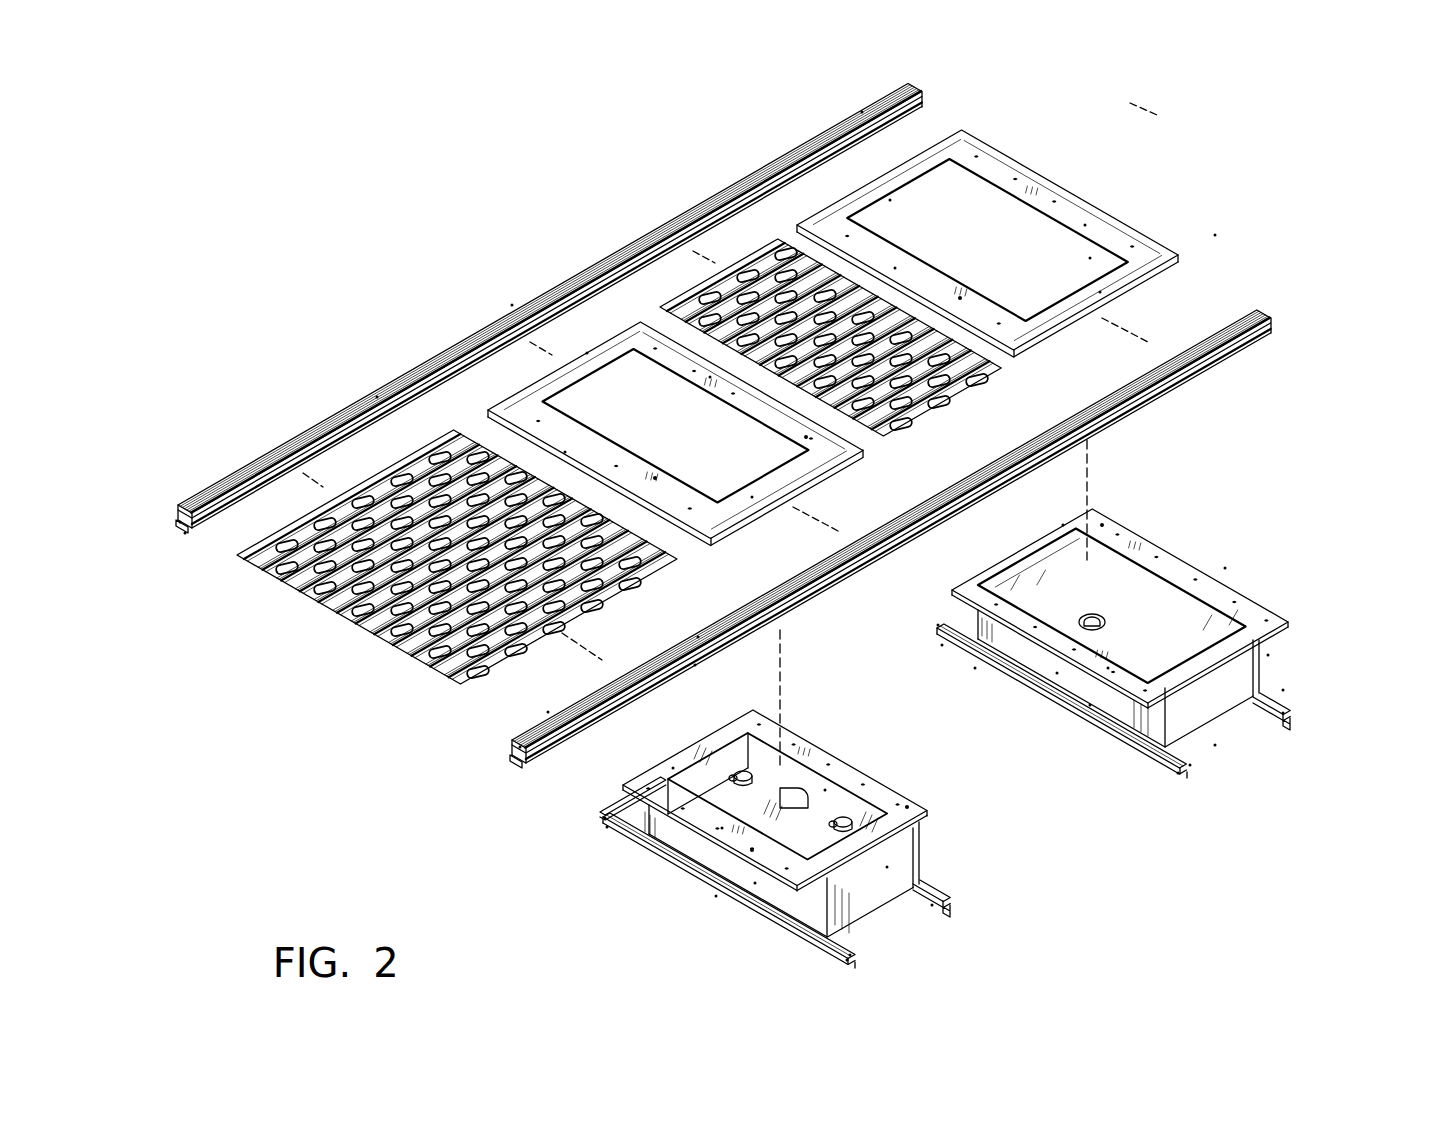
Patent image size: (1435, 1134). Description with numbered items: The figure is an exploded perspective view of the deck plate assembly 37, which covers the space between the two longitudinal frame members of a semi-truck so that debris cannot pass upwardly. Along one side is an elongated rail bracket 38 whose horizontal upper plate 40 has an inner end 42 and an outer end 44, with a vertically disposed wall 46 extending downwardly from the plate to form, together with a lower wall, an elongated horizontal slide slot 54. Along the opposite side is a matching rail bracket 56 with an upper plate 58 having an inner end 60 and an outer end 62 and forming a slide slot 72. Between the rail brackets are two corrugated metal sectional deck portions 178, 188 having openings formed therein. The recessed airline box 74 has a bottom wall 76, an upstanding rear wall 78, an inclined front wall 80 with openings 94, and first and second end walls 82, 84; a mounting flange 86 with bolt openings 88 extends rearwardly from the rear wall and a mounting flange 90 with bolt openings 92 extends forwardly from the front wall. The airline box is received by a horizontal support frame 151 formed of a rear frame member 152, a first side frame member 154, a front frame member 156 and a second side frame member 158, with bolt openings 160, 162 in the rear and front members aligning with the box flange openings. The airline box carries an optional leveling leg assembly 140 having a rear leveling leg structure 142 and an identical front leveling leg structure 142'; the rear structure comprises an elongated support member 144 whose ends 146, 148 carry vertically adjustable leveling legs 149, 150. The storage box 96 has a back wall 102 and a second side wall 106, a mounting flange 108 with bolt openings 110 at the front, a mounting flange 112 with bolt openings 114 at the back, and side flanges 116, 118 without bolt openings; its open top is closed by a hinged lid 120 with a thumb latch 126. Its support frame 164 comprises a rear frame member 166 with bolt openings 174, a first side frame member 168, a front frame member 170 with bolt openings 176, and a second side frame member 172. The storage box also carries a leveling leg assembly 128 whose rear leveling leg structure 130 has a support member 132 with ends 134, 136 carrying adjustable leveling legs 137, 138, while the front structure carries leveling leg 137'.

The deck plate assembly 37 is at (1215, 235).
The rail bracket 38 is at (512, 305).
The upper plate 40 is at (377, 397).
The inner end 42 is at (916, 92).
The outer end 44 is at (862, 112).
The vertically disposed wall 46 is at (180, 522).
The slide slot 54 is at (185, 533).
The rail bracket 56 is at (1205, 375).
The upper plate 58 is at (548, 712).
The inner end 60 is at (698, 637).
The outer end 62 is at (695, 665).
The slide slot 72 is at (520, 747).
The recessed airline box 74 is at (815, 722).
The bottom wall 76 is at (932, 905).
The rear wall 78 is at (755, 883).
The inclined front wall 80 is at (812, 800).
The first end wall 82 is at (673, 768).
The second end wall 84 is at (887, 867).
The mounting flange 86 is at (752, 850).
The bolt openings 88 is at (722, 828).
The mounting flange 90 is at (825, 790).
The bolt openings 92 is at (907, 807).
The openings 94 is at (850, 818).
The storage box 96 is at (1230, 555).
The back wall 102 is at (1057, 673).
The second side wall 106 is at (1283, 690).
The mounting flange 108 is at (1225, 568).
The bolt openings 110 is at (1102, 525).
The mounting flange 112 is at (1090, 705).
The bolt openings 114 is at (1108, 668).
The flange 116 is at (1063, 525).
The flange 118 is at (1268, 655).
The lid 120 is at (1198, 613).
The latch 126 is at (1092, 618).
The leveling leg assembly 128 is at (1215, 745).
The rear leveling leg structure 130 is at (995, 680).
The support member 132 is at (975, 668).
The end 134 is at (938, 625).
The end 136 is at (1190, 765).
The leveling leg 137 is at (896, 622).
The leveling leg 137' is at (1341, 752).
The leveling leg 138 is at (1178, 773).
The leveling leg assembly 140 is at (716, 896).
The rear leveling leg structure 142 is at (581, 834).
The front leveling leg structure 142' is at (1002, 880).
The support member 144 is at (823, 933).
The end 146 is at (605, 818).
The end 148 is at (850, 955).
The leveling leg 149 is at (607, 827).
The leveling leg 150 is at (847, 960).
The support frame 151 is at (587, 353).
The rear frame member 152 is at (565, 452).
The first side frame member 154 is at (540, 378).
The front frame member 156 is at (710, 377).
The second side frame member 158 is at (752, 497).
The bolt openings 160 is at (655, 478).
The bolt openings 162 is at (806, 437).
The support frame 164 is at (1040, 158).
The rear frame member 166 is at (895, 268).
The first side frame member 168 is at (890, 200).
The front frame member 170 is at (1085, 225).
The second side frame member 172 is at (1100, 292).
The bolt openings 174 is at (960, 298).
The bolt openings 176 is at (1090, 258).
The metal sectional deck portion 178 is at (755, 288).
The metal sectional deck portion 188 is at (350, 625).